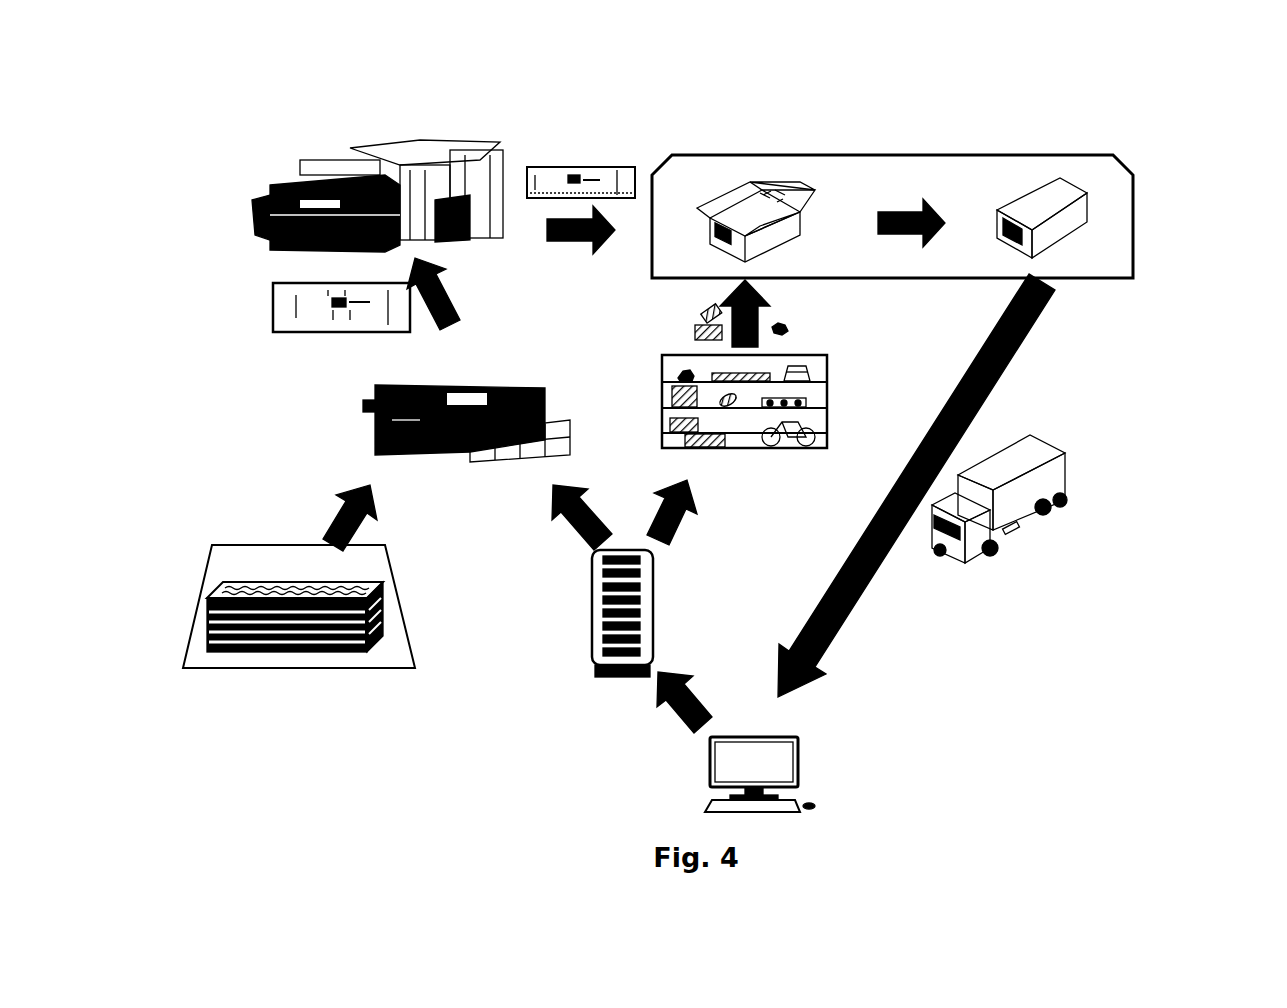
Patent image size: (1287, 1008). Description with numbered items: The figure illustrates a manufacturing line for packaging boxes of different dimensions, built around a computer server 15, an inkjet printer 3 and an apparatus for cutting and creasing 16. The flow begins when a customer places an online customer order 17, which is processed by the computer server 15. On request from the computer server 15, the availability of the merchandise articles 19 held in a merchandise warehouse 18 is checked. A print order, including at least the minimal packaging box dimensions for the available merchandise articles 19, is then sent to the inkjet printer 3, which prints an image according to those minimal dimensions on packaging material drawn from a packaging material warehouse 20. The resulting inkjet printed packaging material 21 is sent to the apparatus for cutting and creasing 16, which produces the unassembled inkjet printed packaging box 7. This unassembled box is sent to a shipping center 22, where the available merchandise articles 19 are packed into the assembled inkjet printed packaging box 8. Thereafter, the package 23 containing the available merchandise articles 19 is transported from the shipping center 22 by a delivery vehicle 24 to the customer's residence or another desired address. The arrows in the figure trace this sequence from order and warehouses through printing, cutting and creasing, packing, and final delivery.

The inkjet printer 3 is at (360, 413).
The unassembled inkjet printed packaging box 7 is at (603, 167).
The assembled inkjet printed packaging box 8 is at (768, 197).
The computer server 15 is at (580, 622).
The apparatus for cutting and creasing 16 is at (292, 175).
The online customer order 17 is at (716, 812).
The merchandise warehouse 18 is at (827, 390).
The merchandise articles 19 is at (695, 333).
The packaging material warehouse 20 is at (333, 668).
The inkjet printed packaging material 21 is at (273, 305).
The shipping center 22 is at (1133, 187).
The package 23 is at (1032, 207).
The delivery vehicle 24 is at (1065, 478).